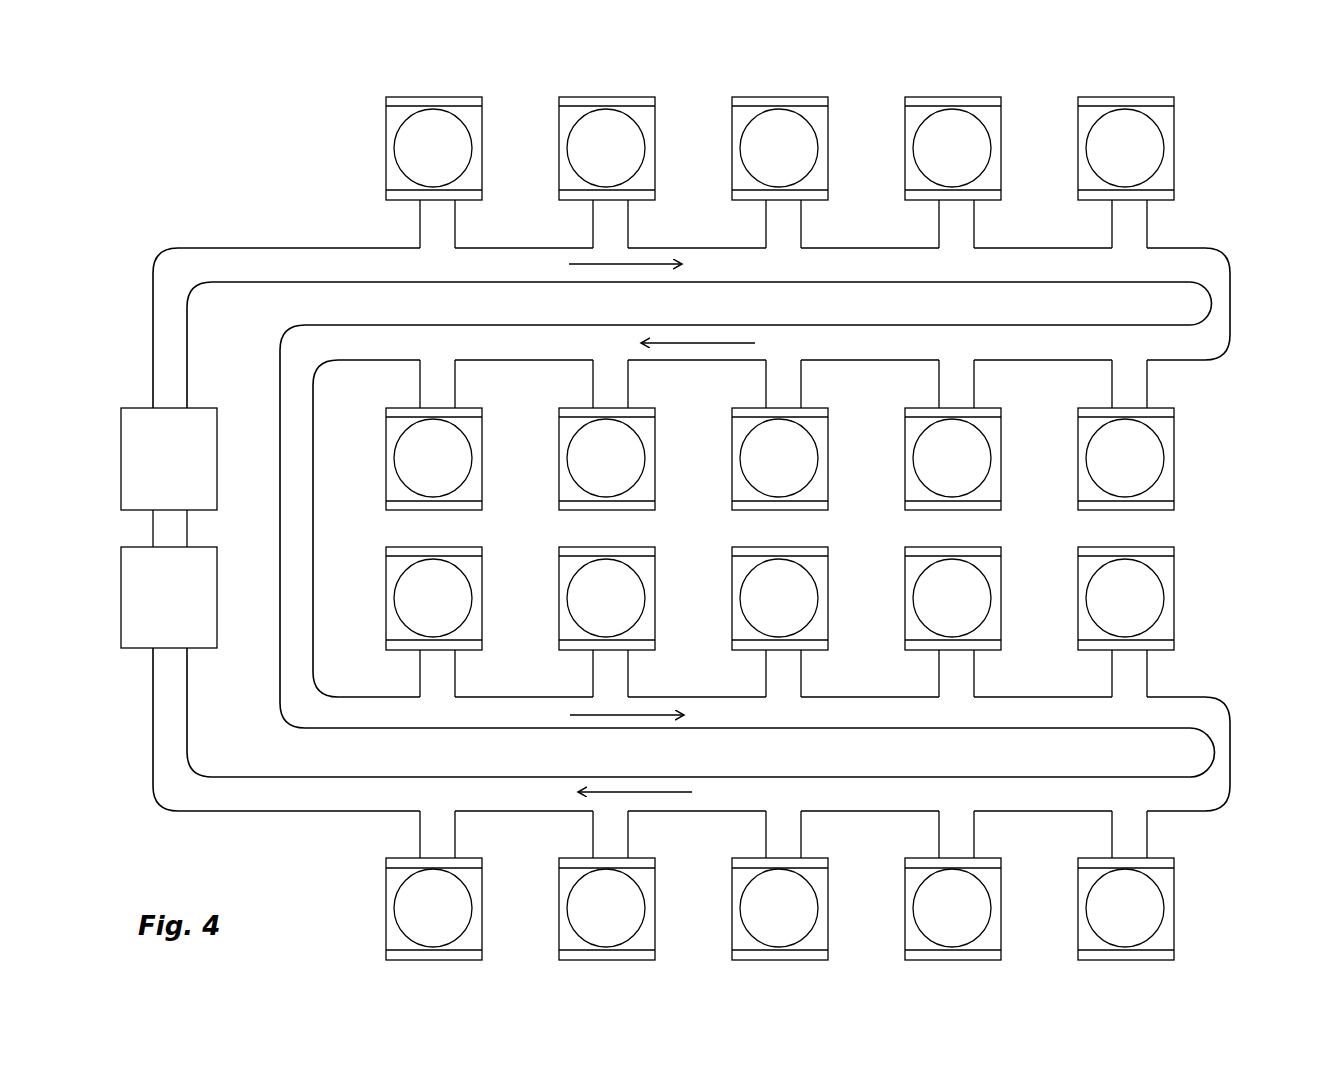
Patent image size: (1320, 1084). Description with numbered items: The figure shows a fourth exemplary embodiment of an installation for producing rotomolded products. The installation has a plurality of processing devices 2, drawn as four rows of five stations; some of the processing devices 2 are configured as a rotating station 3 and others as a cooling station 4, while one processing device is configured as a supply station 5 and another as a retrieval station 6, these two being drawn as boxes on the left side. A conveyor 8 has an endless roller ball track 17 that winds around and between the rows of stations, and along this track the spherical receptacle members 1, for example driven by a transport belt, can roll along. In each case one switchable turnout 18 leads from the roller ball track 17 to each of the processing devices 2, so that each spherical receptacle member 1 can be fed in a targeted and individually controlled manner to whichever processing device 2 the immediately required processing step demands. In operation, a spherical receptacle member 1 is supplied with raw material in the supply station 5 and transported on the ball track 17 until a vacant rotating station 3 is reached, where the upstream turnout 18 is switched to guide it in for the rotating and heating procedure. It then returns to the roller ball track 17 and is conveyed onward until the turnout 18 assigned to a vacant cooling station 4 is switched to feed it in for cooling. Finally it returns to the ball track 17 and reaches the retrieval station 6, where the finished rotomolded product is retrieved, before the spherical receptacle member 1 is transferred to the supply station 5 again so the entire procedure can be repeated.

The spherical receptacle member 1 is at (779, 528).
The processing device 2 is at (781, 502).
The rotating station 3 is at (477, 115).
The cooling station 4 is at (776, 528).
The supply station 5 is at (205, 455).
The retrieval station 6 is at (205, 597).
The conveyor 8 is at (207, 214).
The roller ball track 17 is at (1210, 310).
The switchable turnout 18 is at (410, 240).